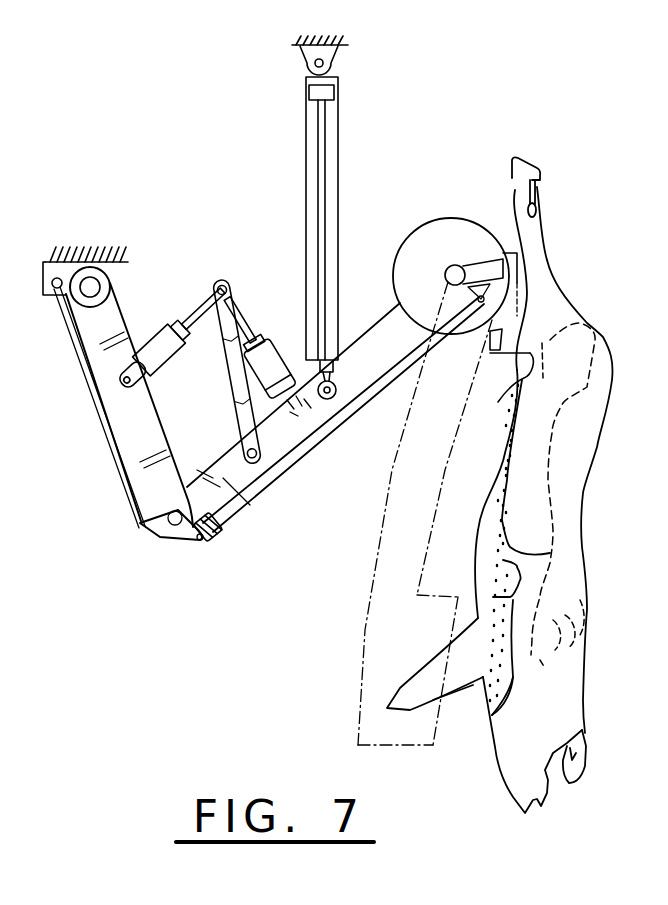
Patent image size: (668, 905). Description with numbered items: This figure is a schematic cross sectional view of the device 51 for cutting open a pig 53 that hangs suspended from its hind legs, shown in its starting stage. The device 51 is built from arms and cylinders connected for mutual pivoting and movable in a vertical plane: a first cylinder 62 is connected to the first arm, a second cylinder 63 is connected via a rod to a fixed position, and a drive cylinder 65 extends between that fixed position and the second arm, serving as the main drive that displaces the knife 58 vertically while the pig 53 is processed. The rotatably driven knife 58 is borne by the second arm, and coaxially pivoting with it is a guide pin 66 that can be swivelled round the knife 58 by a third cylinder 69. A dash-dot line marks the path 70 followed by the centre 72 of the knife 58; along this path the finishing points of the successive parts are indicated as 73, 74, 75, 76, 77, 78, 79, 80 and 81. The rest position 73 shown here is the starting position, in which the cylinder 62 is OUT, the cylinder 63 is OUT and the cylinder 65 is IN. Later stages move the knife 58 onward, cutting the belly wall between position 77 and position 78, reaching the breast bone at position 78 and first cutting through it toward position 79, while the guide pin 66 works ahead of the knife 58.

The device 51 is at (166, 550).
The pig 53 is at (517, 485).
The knife 58 is at (438, 238).
The first cylinder 62 is at (162, 355).
The second cylinder 63 is at (278, 337).
The drive cylinder 65 is at (335, 187).
The guide pin 66 is at (528, 288).
The third cylinder 69 is at (242, 511).
The path 70 is at (448, 459).
The centre of the knife 72 is at (445, 276).
The rest position 73 is at (456, 264).
The finishing point 74 is at (500, 252).
The finishing point 75 is at (490, 341).
The finishing point 76 is at (514, 369).
The finishing point 77 is at (490, 357).
The finishing point 78 is at (413, 595).
The finishing point 79 is at (458, 596).
The finishing point 80 is at (432, 748).
The finishing point 81 is at (358, 745).